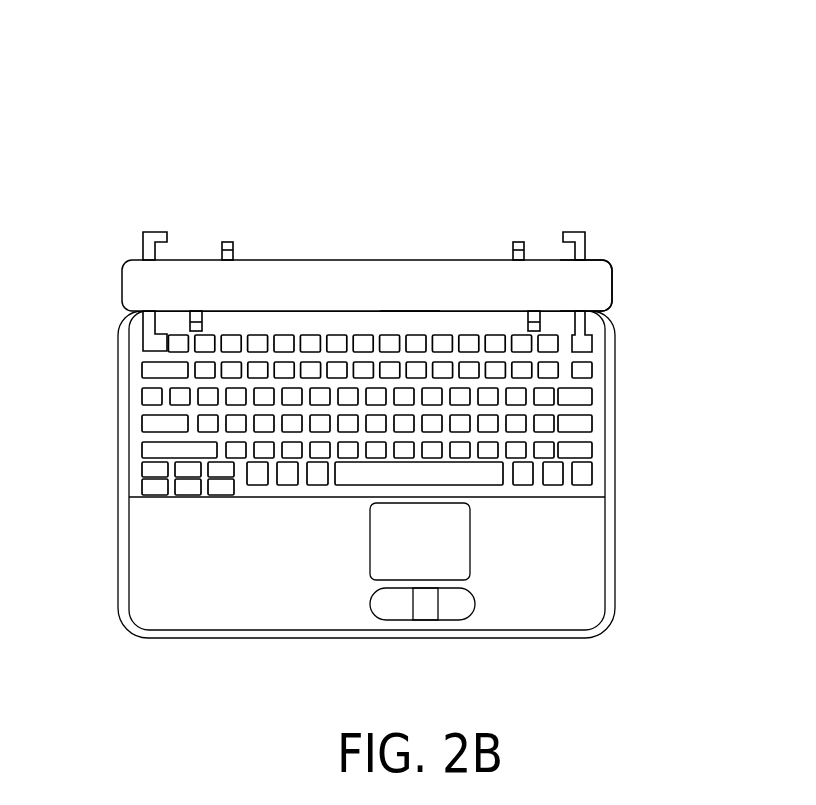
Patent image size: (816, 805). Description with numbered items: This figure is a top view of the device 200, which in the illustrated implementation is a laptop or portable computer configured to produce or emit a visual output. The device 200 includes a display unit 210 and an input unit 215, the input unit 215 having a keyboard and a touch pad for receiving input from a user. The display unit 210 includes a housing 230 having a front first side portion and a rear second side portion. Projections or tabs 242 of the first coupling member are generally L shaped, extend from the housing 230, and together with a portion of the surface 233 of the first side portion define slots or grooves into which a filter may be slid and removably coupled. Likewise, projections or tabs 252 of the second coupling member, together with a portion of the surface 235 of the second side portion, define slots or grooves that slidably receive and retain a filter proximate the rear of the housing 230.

The device 200 is at (377, 320).
The display unit 210 is at (377, 240).
The input unit 215 is at (575, 607).
The housing 230 is at (282, 283).
The surface 233 is at (410, 310).
The surface 235 is at (540, 260).
The projections or tabs 242 is at (150, 333).
The projections or tabs 252 is at (148, 240).